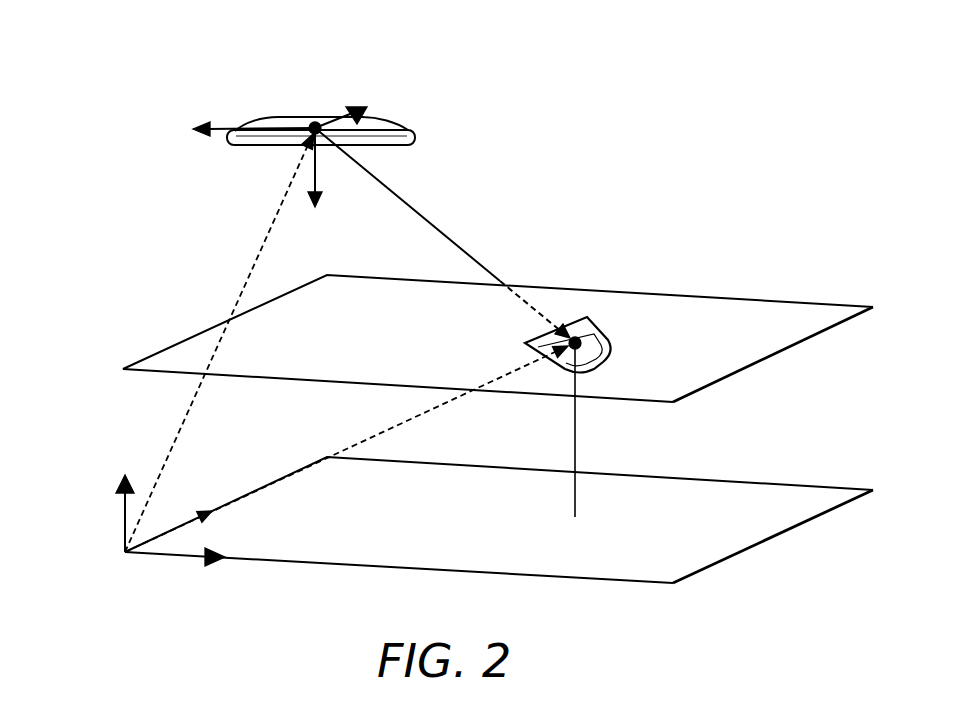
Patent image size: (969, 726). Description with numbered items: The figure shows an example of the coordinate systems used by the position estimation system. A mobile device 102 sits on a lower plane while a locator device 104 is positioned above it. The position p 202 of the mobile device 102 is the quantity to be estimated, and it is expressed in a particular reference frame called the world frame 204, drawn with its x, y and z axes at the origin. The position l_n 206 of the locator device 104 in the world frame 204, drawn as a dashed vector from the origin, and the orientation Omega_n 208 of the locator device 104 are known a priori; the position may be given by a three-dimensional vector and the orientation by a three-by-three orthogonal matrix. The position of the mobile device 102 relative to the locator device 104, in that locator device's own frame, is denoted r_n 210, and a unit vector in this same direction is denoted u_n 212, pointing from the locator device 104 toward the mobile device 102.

The mobile device 102 is at (597, 362).
The locator device 104 is at (247, 147).
The position p of the mobile device 202 is at (387, 430).
The world frame 204 is at (105, 580).
The position l_n of the locator device 206 is at (210, 268).
The orientation Omega_n of the locator device 208 is at (331, 75).
The relative position r_n 210 is at (530, 245).
The unit vector u_n 212 is at (425, 162).